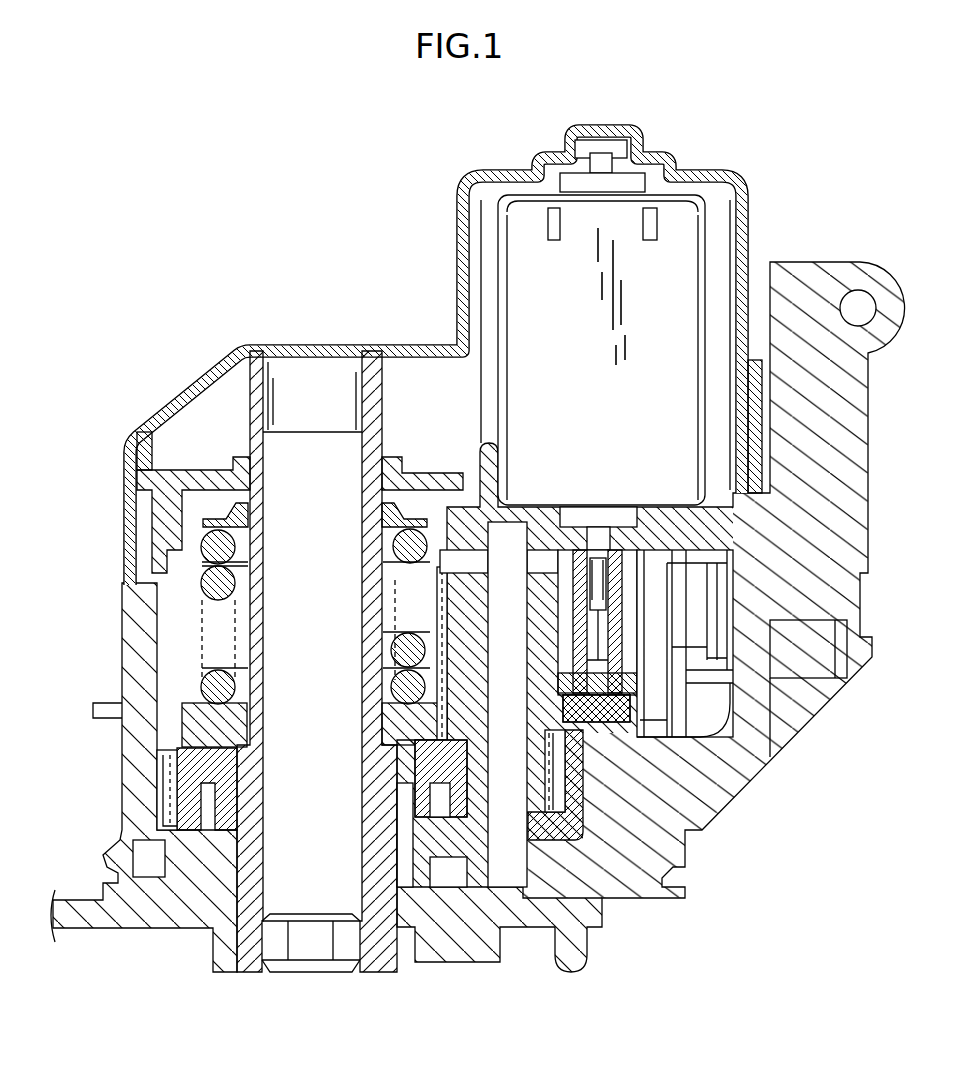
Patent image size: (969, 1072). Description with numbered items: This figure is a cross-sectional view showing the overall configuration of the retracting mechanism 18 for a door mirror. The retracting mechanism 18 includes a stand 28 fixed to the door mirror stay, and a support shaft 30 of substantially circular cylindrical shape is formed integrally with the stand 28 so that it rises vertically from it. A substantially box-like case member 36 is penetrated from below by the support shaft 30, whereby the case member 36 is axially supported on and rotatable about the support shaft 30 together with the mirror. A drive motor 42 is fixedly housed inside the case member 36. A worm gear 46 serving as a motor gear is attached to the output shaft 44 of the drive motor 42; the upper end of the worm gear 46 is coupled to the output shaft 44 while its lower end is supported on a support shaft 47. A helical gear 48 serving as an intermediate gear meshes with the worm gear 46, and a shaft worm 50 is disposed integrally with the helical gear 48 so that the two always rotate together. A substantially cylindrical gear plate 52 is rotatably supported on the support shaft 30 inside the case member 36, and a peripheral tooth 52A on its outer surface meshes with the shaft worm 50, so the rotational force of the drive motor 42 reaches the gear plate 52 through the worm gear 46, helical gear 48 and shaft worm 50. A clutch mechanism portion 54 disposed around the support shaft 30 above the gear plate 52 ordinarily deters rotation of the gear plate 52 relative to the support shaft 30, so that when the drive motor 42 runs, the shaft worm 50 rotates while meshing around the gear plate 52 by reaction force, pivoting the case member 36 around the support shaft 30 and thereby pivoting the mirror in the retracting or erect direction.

The retracting mechanism 18 is at (335, 222).
The stand 28 is at (470, 972).
The support shaft 30 is at (256, 606).
The case member 36 is at (457, 268).
The drive motor 42 is at (748, 233).
The output shaft 44 is at (593, 540).
The worm gear 46 is at (633, 648).
The support shaft 47 is at (595, 690).
The helical gear 48 is at (437, 613).
The shaft worm 50 is at (552, 797).
The gear plate 52 is at (185, 765).
The peripheral tooth 52A is at (168, 808).
The clutch mechanism portion 54 is at (169, 677).